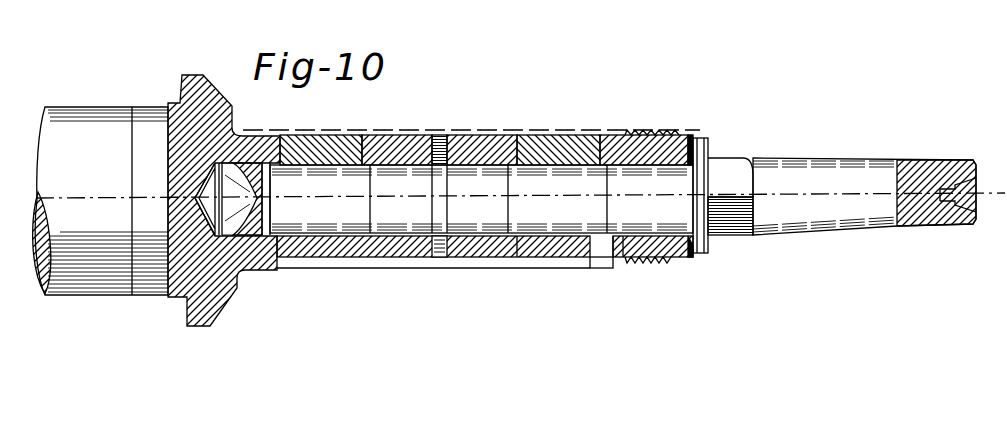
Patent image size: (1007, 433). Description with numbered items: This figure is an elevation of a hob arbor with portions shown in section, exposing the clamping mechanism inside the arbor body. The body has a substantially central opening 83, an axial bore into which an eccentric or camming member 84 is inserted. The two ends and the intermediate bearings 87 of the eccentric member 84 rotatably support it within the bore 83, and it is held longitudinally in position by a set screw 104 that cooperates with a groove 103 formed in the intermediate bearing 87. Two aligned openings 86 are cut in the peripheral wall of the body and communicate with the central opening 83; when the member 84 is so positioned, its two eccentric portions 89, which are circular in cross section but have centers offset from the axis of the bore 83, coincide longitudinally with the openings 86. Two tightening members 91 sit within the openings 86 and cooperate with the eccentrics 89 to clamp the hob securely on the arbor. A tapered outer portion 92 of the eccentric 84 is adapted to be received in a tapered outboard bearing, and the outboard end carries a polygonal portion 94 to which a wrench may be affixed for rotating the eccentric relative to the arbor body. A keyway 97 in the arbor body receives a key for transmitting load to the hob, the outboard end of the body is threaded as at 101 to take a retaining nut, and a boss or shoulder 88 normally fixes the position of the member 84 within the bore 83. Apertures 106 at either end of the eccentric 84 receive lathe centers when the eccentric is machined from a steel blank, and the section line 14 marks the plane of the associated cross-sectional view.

The section line 14 is at (534, 62).
The central opening 83 is at (590, 244).
The eccentric member 84 is at (817, 160).
The aligned openings 86 is at (273, 137).
The intermediate bearing 87 is at (360, 163).
The boss or shoulder 88 is at (708, 254).
The eccentric portions 89 is at (532, 226).
The tightening members 91 is at (324, 136).
The tapered outer portion 92 is at (842, 226).
The polygonal portion 94 is at (727, 158).
The keyway 97 is at (395, 268).
The threads 101 is at (640, 131).
The groove 103 is at (440, 258).
The set screw 104 is at (450, 110).
The apertures 106 is at (255, 207).